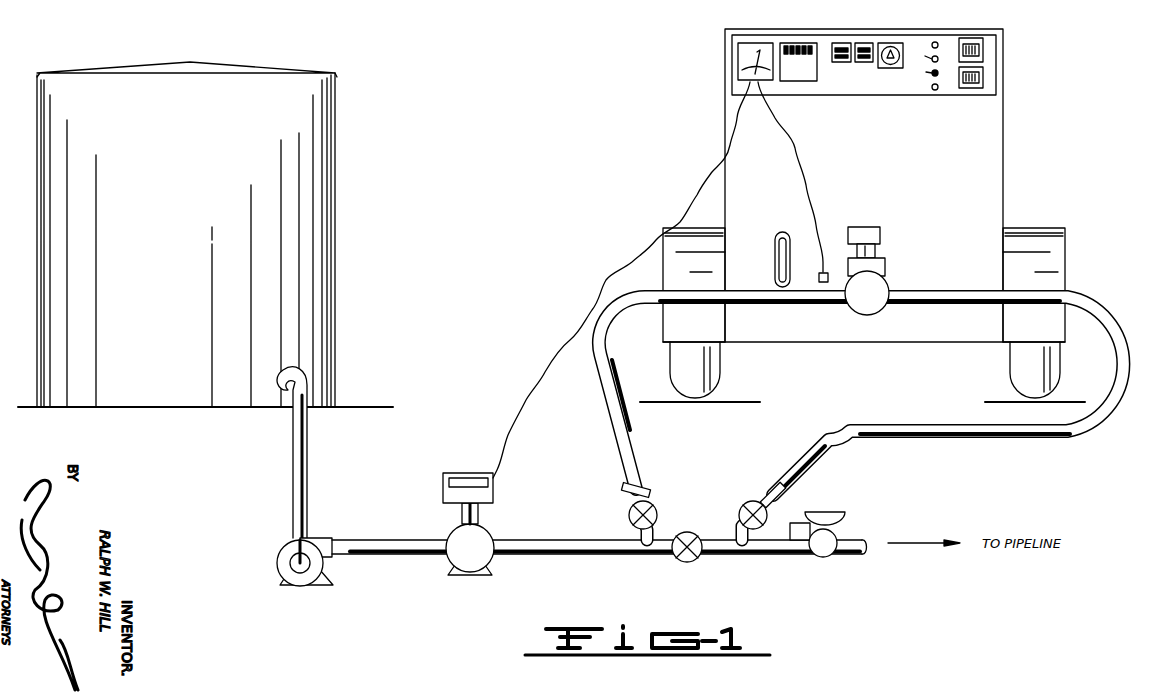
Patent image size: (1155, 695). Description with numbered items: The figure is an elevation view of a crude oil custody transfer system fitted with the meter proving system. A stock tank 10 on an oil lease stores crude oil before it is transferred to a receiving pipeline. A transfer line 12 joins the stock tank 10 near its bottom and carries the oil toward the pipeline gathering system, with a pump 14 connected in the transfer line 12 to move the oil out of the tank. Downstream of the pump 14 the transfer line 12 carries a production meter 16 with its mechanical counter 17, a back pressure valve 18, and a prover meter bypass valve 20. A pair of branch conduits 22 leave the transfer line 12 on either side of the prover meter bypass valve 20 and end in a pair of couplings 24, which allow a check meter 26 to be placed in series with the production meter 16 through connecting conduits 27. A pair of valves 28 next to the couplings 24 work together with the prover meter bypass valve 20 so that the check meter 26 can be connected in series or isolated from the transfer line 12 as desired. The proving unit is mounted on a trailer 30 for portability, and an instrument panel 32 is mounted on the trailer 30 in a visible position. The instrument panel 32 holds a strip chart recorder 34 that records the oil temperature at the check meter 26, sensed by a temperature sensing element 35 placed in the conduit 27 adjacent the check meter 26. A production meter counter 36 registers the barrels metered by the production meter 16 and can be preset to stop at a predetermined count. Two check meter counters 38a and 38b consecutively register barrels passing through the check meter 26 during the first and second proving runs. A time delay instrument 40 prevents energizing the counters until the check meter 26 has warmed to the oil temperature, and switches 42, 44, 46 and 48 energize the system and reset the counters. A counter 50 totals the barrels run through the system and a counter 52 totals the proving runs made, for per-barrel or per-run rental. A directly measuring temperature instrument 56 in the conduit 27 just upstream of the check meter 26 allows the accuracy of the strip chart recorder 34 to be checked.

The stock tank 10 is at (310, 88).
The transfer line 12 is at (303, 447).
The pump 14 is at (318, 545).
The production meter 16 is at (493, 556).
The mechanical counter 17 is at (495, 493).
The back pressure valve 18 is at (826, 556).
The prover meter bypass valve 20 is at (691, 561).
The branch conduits 22 is at (656, 536).
The couplings 24 is at (646, 488).
The check meter 26 is at (862, 312).
The connecting conduits 27 is at (602, 418).
The valves 28 is at (656, 506).
The trailer 30 is at (862, 207).
The instrument panel 32 is at (854, 61).
The strip chart recorder 34 is at (748, 44).
The temperature sensing element 35 is at (820, 278).
The production meter counter 36 is at (800, 43).
The check meter counter 38a is at (840, 43).
The check meter counter 38b is at (866, 43).
The time delay instrument 40 is at (893, 68).
The switch 42 is at (937, 42).
The switch 44 is at (923, 55).
The switch 46 is at (923, 70).
The switch 48 is at (933, 90).
The counter 50 is at (975, 38).
The counter 52 is at (985, 76).
The directly measuring temperature instrument 56 is at (774, 247).